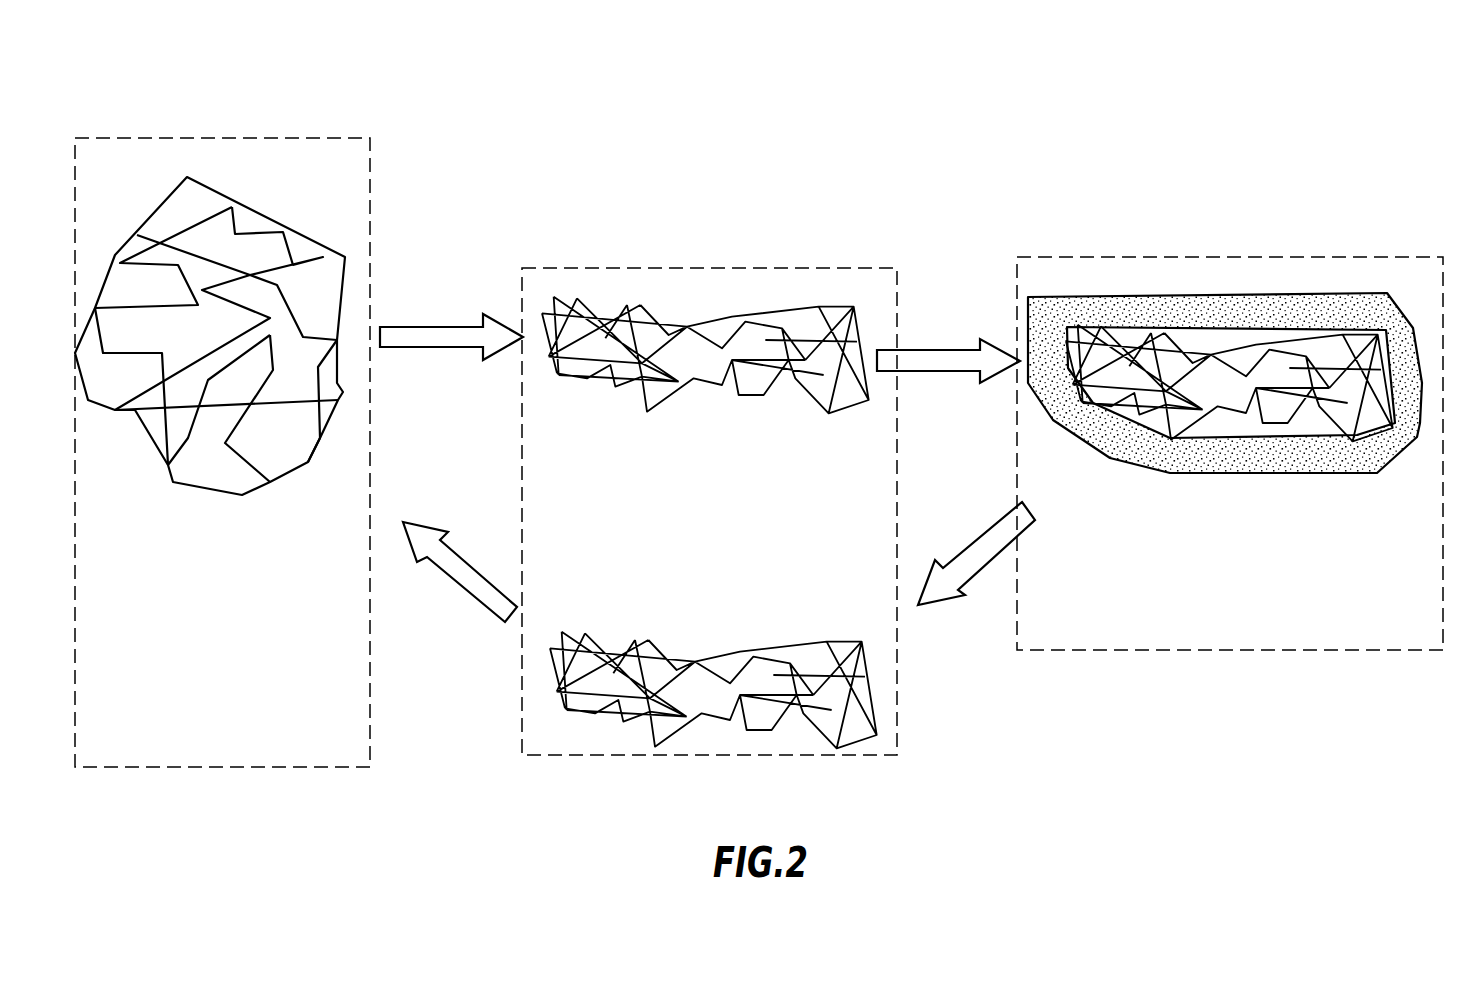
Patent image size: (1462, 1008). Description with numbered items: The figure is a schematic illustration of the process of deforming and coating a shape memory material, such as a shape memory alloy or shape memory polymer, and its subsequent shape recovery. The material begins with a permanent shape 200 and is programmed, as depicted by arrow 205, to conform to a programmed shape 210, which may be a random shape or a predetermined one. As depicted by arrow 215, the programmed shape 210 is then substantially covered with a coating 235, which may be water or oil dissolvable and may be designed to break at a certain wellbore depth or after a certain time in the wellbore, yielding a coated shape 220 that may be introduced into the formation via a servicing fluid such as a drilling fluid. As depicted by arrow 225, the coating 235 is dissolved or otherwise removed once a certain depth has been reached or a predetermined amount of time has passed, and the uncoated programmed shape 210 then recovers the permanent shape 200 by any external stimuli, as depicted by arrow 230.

The permanent shape 200 is at (268, 195).
The arrow 205 is at (432, 323).
The programmed shape 210 is at (690, 308).
The arrow 215 is at (925, 348).
The coated shape 220 is at (1225, 380).
The arrow 225 is at (938, 607).
The arrow 230 is at (475, 600).
The coating 235 is at (1272, 473).